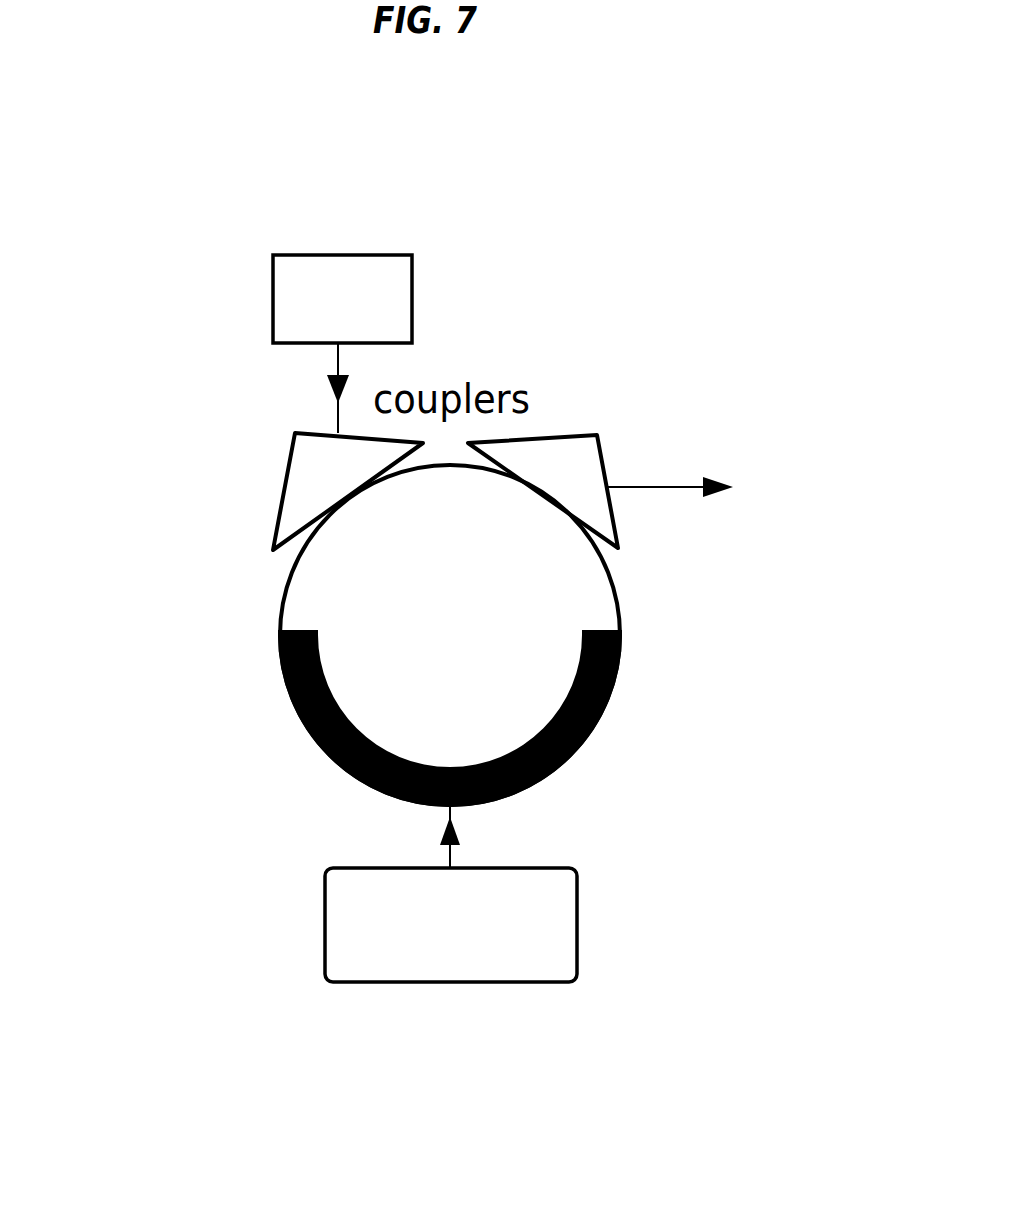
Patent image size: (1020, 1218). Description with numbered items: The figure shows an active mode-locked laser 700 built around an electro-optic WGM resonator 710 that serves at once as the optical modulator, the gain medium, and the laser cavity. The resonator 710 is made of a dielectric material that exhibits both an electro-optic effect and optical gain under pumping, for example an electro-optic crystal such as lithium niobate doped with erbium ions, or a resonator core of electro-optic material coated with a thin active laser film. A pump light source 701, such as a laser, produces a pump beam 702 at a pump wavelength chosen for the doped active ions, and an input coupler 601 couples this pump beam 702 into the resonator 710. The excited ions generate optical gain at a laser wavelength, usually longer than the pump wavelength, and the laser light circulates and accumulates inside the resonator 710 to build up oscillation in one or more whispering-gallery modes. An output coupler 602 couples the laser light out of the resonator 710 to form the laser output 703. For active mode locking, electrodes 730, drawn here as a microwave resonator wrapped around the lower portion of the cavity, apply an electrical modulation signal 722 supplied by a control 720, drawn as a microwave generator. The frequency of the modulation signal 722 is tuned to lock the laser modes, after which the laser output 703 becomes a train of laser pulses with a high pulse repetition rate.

The active mode-locked laser 700 is at (590, 270).
The pump light source 701 is at (343, 267).
The pump beam 702 is at (345, 393).
The input coupler 601 is at (283, 486).
The output coupler 602 is at (570, 448).
The laser output 703 is at (683, 483).
The electro-optic WGM resonator 710 is at (300, 613).
The electrodes 730 is at (607, 740).
The control 720 is at (470, 973).
The electrical modulation signal 722 is at (445, 838).